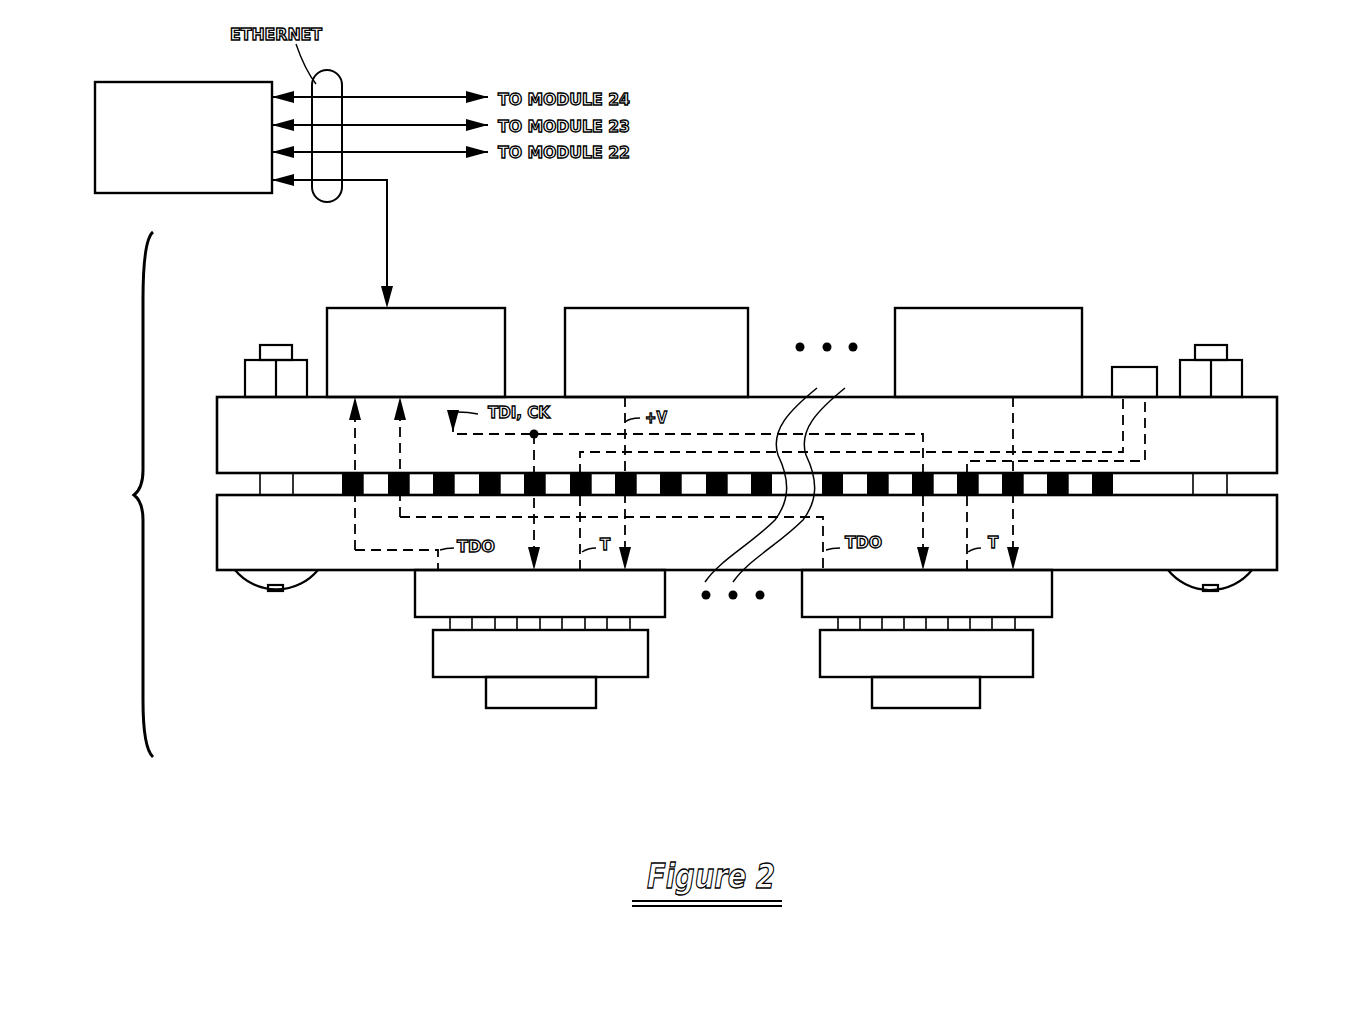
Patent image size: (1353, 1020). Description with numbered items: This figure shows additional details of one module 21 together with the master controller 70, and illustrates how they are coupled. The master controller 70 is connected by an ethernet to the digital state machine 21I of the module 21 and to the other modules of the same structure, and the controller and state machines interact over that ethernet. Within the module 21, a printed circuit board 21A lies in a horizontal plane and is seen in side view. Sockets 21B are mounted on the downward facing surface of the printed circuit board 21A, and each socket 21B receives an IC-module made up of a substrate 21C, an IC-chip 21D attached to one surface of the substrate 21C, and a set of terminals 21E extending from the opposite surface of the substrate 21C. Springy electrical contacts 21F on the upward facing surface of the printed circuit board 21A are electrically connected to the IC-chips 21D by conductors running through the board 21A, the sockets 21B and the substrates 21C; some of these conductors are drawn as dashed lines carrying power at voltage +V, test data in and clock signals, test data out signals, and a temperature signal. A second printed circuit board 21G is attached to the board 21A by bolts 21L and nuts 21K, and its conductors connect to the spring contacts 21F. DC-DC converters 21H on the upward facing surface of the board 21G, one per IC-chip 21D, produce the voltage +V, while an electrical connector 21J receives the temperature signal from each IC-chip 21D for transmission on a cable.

The master controller 70 is at (158, 82).
The module 21 is at (125, 494).
The printed circuit board 21A is at (1100, 571).
The socket 21B is at (663, 600).
The substrate 21C is at (632, 678).
The IC-chip 21D is at (555, 706).
The set of terminals 21E is at (450, 622).
The springy electrical contact 21F is at (390, 497).
The printed circuit board 21G is at (1265, 395).
The DC-DC converter 21H is at (665, 306).
The digital state machine 21I is at (478, 306).
The electrical connector 21J is at (1135, 366).
The nut 21K is at (258, 357).
The bolt 21L is at (257, 590).